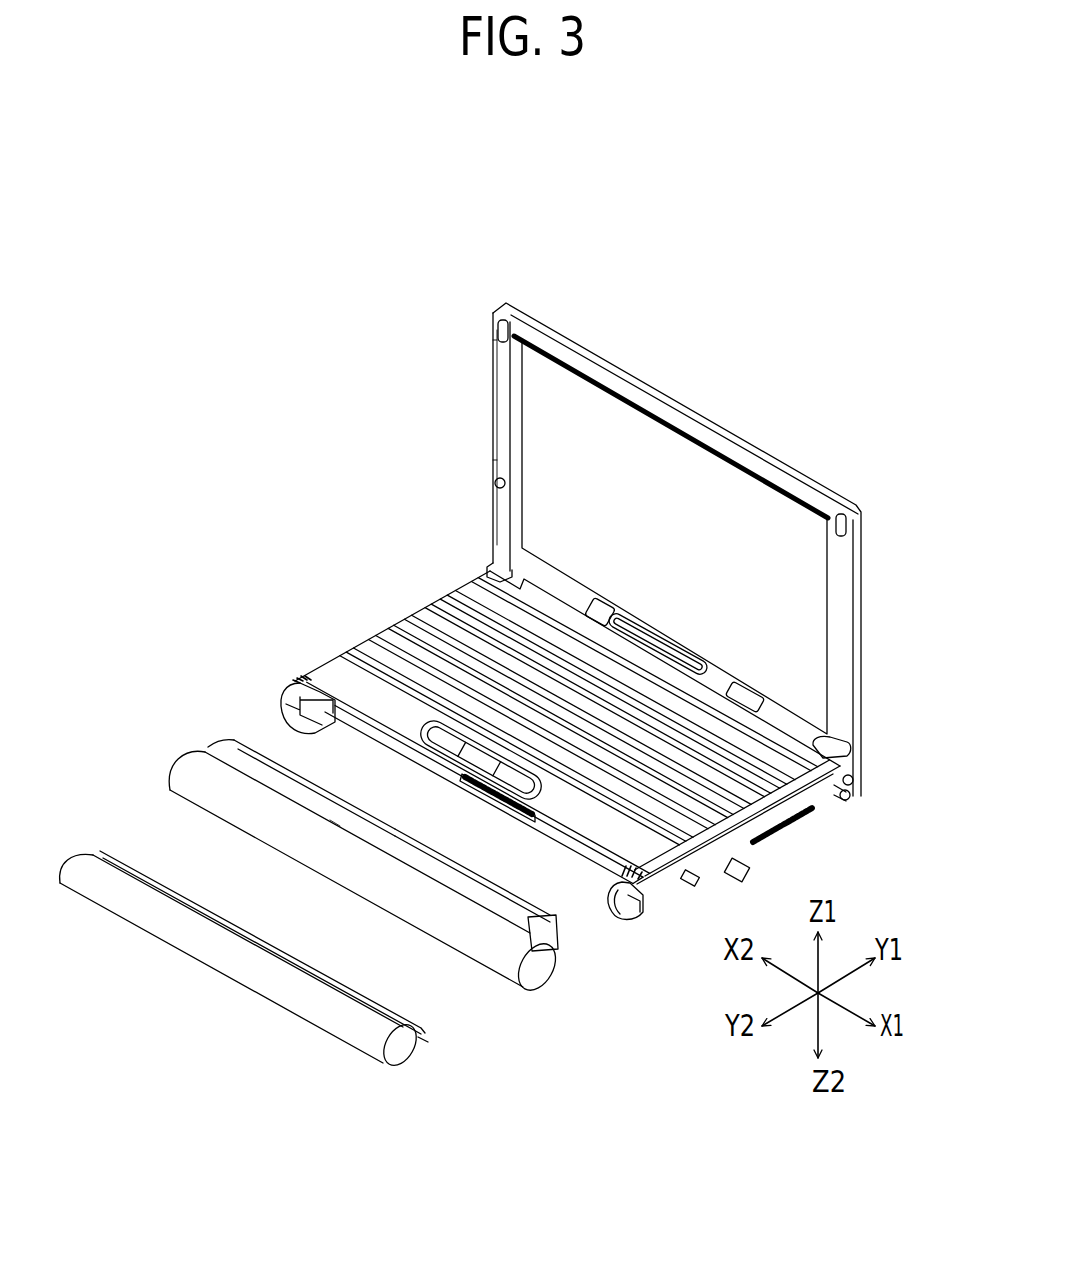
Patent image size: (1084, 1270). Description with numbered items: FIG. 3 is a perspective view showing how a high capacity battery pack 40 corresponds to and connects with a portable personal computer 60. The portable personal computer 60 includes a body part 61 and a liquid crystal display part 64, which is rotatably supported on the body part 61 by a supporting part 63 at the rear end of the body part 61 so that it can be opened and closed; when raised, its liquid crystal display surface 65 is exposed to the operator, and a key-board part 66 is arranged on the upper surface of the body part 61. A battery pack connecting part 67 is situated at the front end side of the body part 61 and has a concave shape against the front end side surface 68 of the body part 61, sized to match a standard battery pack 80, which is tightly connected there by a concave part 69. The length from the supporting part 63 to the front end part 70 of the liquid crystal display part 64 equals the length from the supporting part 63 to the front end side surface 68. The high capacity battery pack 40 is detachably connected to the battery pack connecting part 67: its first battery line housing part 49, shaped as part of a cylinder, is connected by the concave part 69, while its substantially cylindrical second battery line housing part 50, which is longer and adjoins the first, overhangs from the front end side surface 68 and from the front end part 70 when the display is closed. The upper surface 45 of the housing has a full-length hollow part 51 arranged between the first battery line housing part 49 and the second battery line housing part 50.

The portable personal computer 60 is at (782, 258).
The body part 61 is at (390, 627).
The supporting part 63 is at (823, 748).
The liquid crystal display part 64 is at (847, 578).
The liquid crystal display surface 65 is at (537, 430).
The key-board part 66 is at (470, 607).
The battery pack connecting part 67 is at (337, 737).
The front end side surface 68 is at (612, 896).
The concave part 69 is at (500, 790).
The front end part 70 is at (717, 418).
The high capacity battery pack 40 is at (387, 918).
The upper surface 45 is at (385, 828).
The first battery line housing part 49 is at (497, 898).
The second battery line housing part 50 is at (307, 855).
The hollow part 51 is at (455, 883).
The standard battery pack 80 is at (310, 1010).